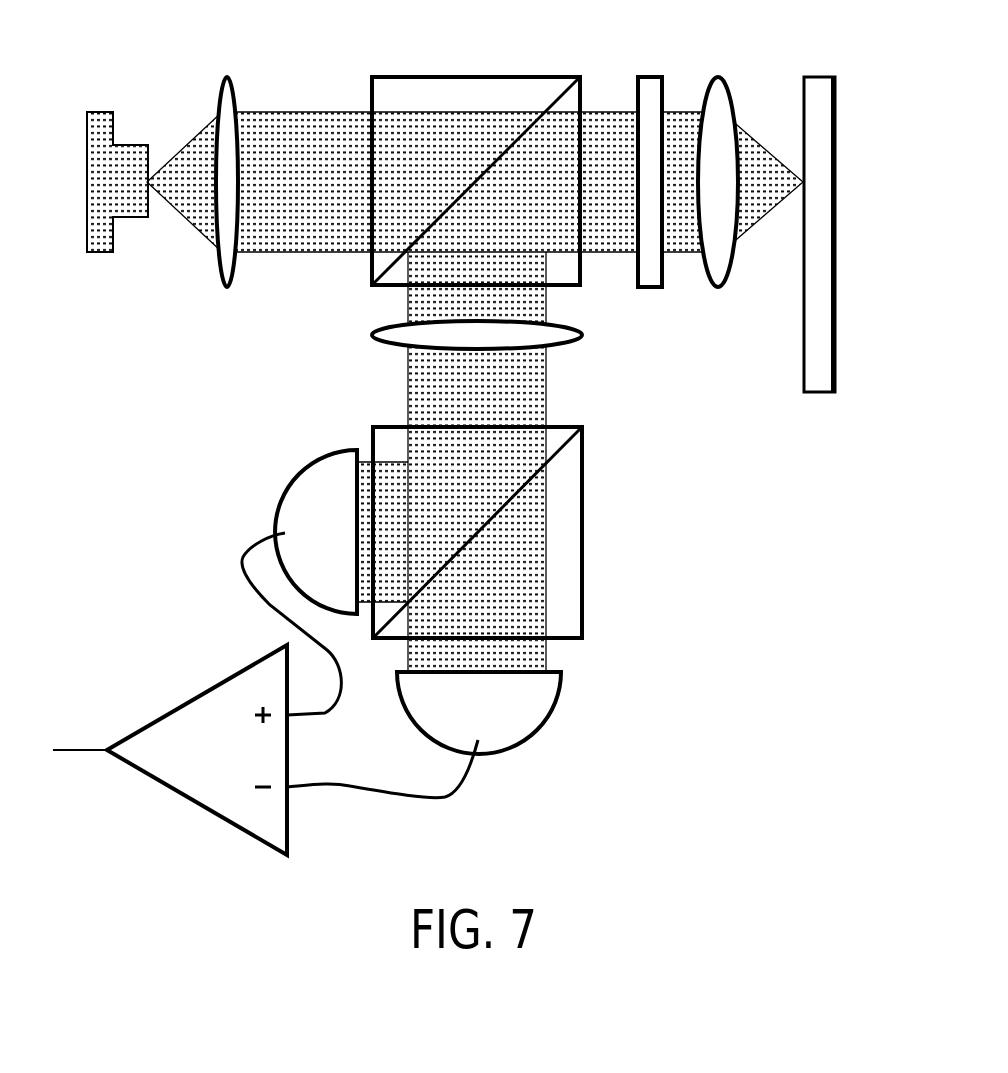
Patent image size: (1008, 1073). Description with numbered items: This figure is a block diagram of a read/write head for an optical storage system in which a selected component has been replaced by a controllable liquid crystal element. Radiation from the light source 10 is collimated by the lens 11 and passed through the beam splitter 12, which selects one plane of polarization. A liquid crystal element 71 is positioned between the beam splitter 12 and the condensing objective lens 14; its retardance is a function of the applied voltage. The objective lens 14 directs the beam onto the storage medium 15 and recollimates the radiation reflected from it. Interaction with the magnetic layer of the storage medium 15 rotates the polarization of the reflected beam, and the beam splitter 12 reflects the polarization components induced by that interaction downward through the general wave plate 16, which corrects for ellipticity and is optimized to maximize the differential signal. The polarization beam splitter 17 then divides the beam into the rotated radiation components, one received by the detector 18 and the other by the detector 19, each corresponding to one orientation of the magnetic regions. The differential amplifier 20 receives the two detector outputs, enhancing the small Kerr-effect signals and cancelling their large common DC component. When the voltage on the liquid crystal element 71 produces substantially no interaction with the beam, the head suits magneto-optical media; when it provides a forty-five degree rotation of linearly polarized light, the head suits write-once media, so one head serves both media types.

The light source 10 is at (100, 112).
The lens 11 is at (227, 77).
The beam splitter 12 is at (475, 77).
The liquid crystal element 71 is at (638, 77).
The objective lens 14 is at (718, 77).
The storage medium 15 is at (820, 77).
The general wave plate 16 is at (582, 335).
The polarization beam splitter 17 is at (582, 530).
The detector 18 is at (313, 470).
The detector 19 is at (545, 713).
The differential amplifier 20 is at (237, 668).